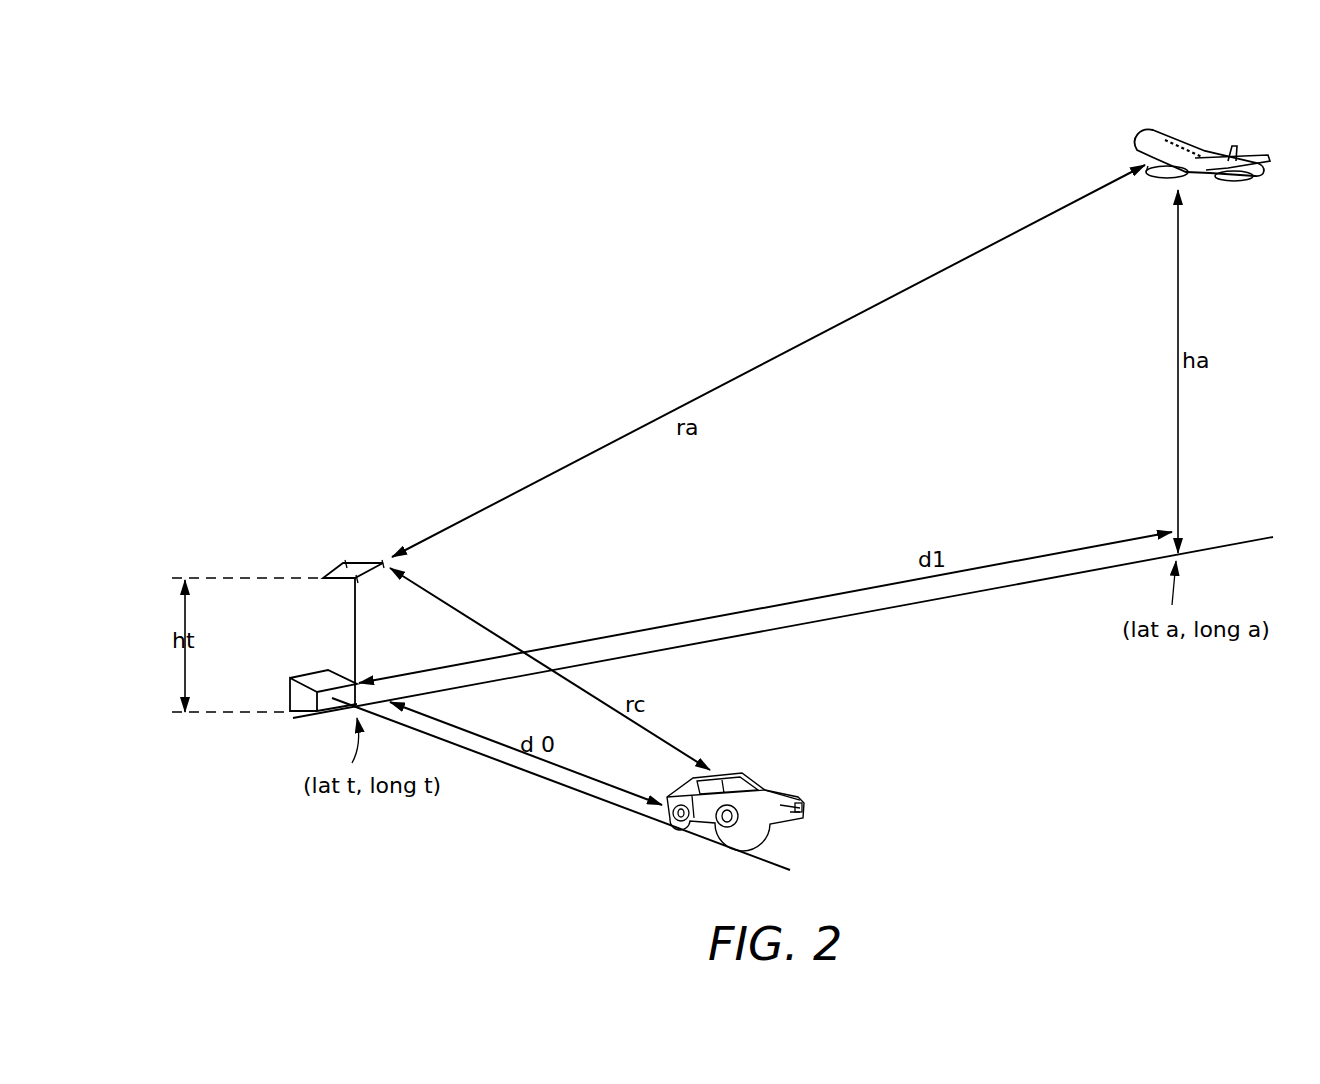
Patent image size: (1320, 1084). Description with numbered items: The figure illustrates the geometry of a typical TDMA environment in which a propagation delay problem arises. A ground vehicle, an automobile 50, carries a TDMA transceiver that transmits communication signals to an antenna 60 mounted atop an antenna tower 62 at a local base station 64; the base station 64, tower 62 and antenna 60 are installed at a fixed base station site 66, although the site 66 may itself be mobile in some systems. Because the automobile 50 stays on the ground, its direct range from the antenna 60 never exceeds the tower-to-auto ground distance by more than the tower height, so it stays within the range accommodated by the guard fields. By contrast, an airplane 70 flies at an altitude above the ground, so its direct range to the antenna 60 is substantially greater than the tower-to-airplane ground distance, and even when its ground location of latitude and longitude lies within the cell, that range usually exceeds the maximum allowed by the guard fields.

The airplane 70 is at (1127, 130).
The antenna 60 is at (360, 560).
The antenna tower 62 is at (355, 610).
The base station 64 is at (305, 672).
The base station site 66 is at (283, 723).
The vehicle 50 is at (808, 787).